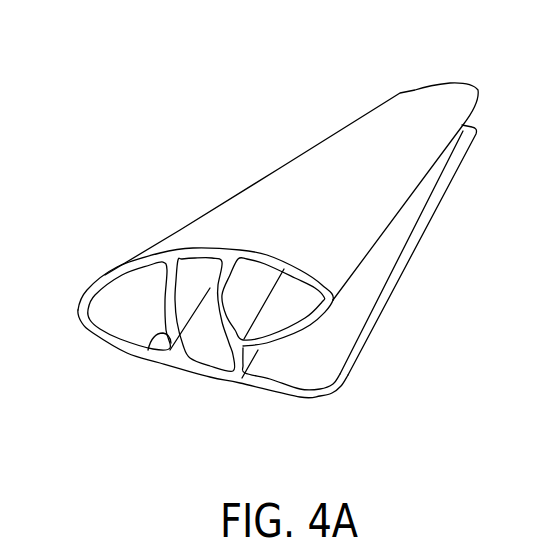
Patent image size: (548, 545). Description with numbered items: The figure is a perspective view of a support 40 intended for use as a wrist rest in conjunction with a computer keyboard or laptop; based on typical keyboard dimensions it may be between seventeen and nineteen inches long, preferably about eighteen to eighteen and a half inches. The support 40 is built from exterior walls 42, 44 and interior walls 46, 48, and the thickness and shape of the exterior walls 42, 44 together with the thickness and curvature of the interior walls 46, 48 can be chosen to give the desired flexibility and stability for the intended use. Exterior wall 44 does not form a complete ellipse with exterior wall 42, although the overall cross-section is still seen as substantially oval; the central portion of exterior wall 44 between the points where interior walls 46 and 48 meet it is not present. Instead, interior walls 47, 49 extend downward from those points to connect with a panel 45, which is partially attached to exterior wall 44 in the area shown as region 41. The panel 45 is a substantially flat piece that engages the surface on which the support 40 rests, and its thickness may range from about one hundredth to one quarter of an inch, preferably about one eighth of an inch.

The support 40 is at (288, 104).
The region 41 is at (90, 337).
The exterior wall 42 is at (205, 237).
The exterior wall 44 is at (307, 330).
The panel 45 is at (293, 378).
The interior wall 46 is at (222, 298).
The interior wall 47 is at (238, 372).
The interior wall 48 is at (148, 350).
The interior wall 49 is at (166, 322).